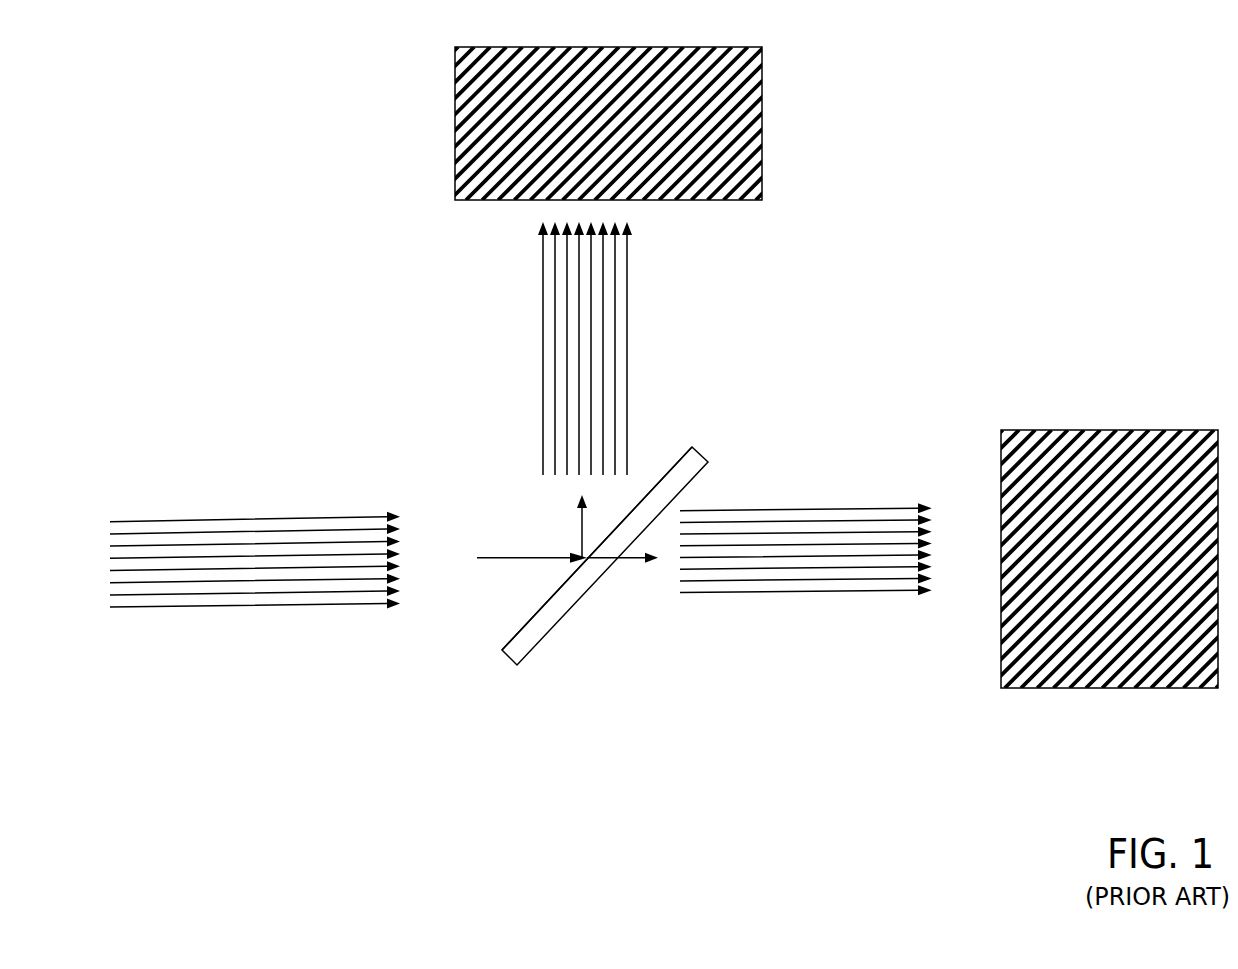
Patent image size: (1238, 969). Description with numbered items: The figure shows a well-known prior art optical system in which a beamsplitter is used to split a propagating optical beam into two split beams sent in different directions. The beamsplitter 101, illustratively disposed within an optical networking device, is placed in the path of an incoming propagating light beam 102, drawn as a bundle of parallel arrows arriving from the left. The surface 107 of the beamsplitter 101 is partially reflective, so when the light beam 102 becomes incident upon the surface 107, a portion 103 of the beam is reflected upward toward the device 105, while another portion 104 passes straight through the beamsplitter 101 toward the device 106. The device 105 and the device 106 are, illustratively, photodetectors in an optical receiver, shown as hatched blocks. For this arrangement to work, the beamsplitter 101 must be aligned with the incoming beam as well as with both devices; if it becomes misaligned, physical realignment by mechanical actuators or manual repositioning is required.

The beamsplitter 101 is at (530, 632).
The incoming propagating light beam 102 is at (207, 518).
The reflected portion of light beam 103 is at (633, 348).
The transmitted portion of light beam 104 is at (798, 510).
The device 105 is at (762, 152).
The device 106 is at (1127, 428).
The surface 107 is at (553, 593).